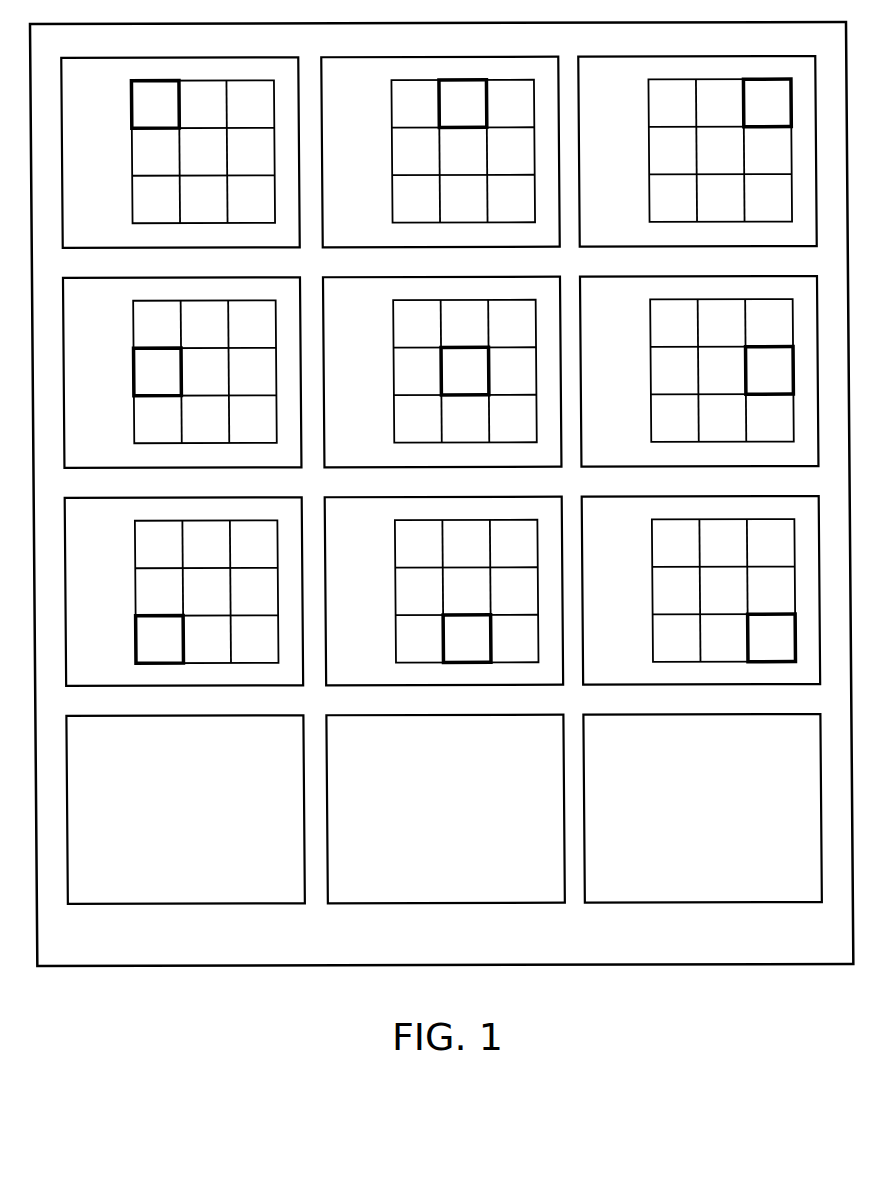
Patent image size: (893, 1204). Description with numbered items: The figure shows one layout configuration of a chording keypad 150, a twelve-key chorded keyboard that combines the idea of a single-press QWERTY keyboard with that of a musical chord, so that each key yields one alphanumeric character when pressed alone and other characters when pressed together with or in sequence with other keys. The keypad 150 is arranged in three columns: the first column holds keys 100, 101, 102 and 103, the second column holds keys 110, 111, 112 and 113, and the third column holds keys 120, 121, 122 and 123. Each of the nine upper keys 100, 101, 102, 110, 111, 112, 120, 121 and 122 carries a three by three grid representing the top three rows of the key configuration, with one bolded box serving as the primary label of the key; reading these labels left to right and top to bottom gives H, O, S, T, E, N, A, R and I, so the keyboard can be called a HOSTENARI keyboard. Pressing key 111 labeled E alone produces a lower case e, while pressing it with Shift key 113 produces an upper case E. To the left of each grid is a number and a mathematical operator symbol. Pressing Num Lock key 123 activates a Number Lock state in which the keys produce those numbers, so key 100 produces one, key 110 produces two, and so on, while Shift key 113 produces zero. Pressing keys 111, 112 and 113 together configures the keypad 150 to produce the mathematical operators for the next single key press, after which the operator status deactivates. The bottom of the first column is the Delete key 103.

The keypad 150 is at (831, 960).
The key 100 is at (106, 243).
The key 110 is at (366, 243).
The key 120 is at (623, 243).
The key 101 is at (106, 463).
The key 111 is at (366, 463).
The key 121 is at (623, 463).
The key 102 is at (106, 683).
The key 112 is at (366, 683).
The key 122 is at (623, 683).
The Delete key 103 is at (106, 899).
The Shift key 113 is at (366, 899).
The Num Lock key 123 is at (623, 899).